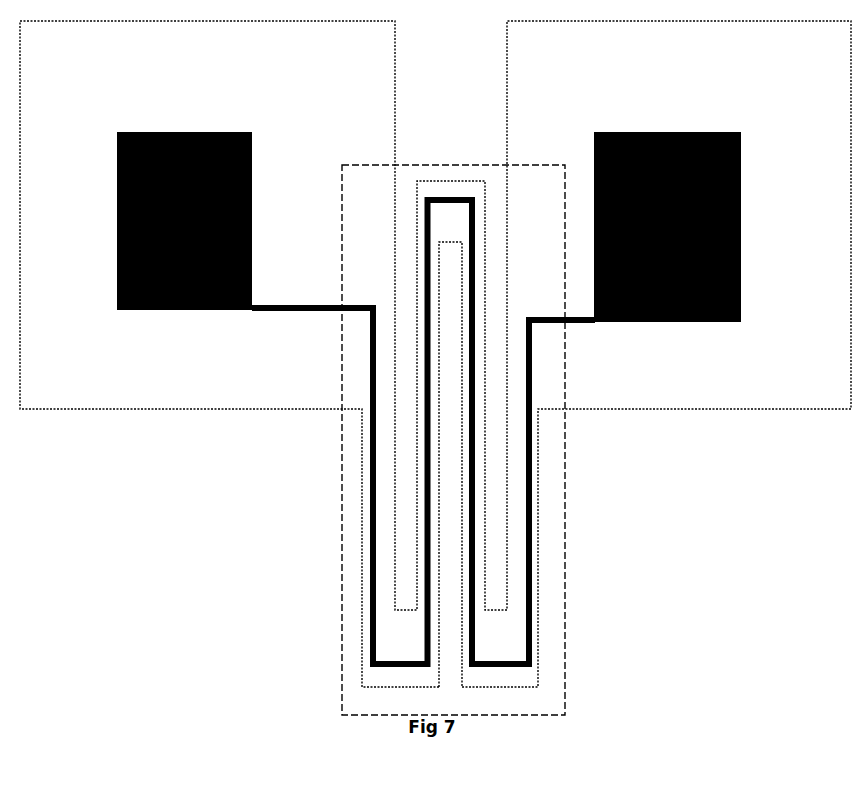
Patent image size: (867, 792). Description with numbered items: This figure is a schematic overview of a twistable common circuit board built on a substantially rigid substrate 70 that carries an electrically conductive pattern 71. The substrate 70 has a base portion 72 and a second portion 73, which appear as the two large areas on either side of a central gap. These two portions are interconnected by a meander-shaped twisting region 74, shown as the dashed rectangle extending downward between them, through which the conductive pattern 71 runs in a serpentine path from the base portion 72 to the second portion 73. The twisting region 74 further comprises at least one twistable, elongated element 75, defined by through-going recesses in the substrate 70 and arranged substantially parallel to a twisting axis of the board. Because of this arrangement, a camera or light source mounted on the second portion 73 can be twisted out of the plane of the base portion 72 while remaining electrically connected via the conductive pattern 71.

The substantially rigid substrate 70 is at (457, 21).
The electrically conductive pattern 71 is at (534, 549).
The base portion 72 is at (157, 186).
The second portion 73 is at (696, 192).
The meander-shaped twisting region 74 is at (350, 700).
The twistable, elongated element 75 is at (450, 451).